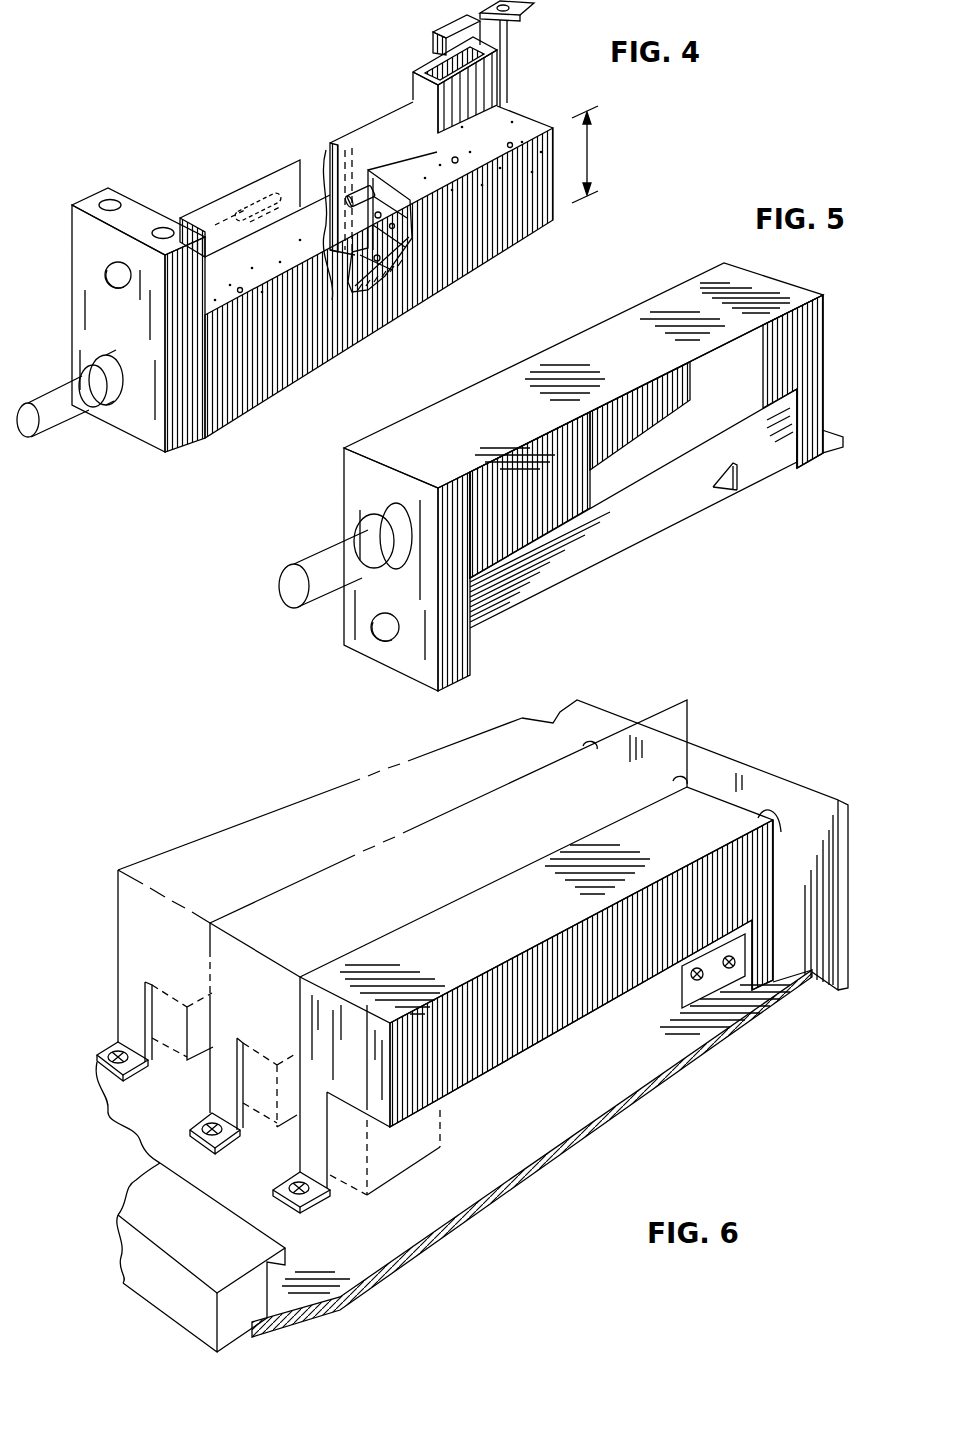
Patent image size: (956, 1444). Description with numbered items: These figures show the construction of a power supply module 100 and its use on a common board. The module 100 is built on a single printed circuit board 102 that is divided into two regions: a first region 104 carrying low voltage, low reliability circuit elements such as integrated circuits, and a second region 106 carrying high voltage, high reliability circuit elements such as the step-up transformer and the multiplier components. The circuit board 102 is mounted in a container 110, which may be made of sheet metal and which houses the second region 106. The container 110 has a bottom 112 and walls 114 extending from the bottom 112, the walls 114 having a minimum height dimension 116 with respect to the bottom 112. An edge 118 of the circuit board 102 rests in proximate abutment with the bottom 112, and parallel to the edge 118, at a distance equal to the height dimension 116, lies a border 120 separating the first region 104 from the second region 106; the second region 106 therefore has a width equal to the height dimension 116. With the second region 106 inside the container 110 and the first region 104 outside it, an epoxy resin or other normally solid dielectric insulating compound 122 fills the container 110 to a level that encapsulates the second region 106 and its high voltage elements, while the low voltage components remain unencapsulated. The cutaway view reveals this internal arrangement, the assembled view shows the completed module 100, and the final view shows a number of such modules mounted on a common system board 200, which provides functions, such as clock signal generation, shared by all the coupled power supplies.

In FIG. 4, the power supply module 100 is at (200, 158).
In FIG. 5, the power supply module 100 is at (845, 303).
In FIG. 4, the printed circuit board 102 is at (392, 108).
In FIG. 5, the printed circuit board 102 is at (620, 522).
In FIG. 4, the first region 104 is at (287, 182).
In FIG. 4, the second region 106 is at (332, 205).
In FIG. 4, the container 110 is at (115, 428).
In FIG. 5, the container 110 is at (345, 468).
In FIG. 6, the container 110 is at (487, 1073).
In FIG. 4, the bottom 112 is at (352, 262).
In FIG. 5, the bottom 112 is at (627, 323).
In FIG. 4, the walls 114 is at (207, 410).
In FIG. 5, the walls 114 is at (800, 352).
In FIG. 4, the height dimension 116 is at (602, 167).
In FIG. 4, the edge 118 is at (328, 265).
In FIG. 4, the border 120 is at (300, 185).
In FIG. 4, the dielectric insulating compound 122 is at (407, 242).
In FIG. 6, the system board 200 is at (637, 1067).